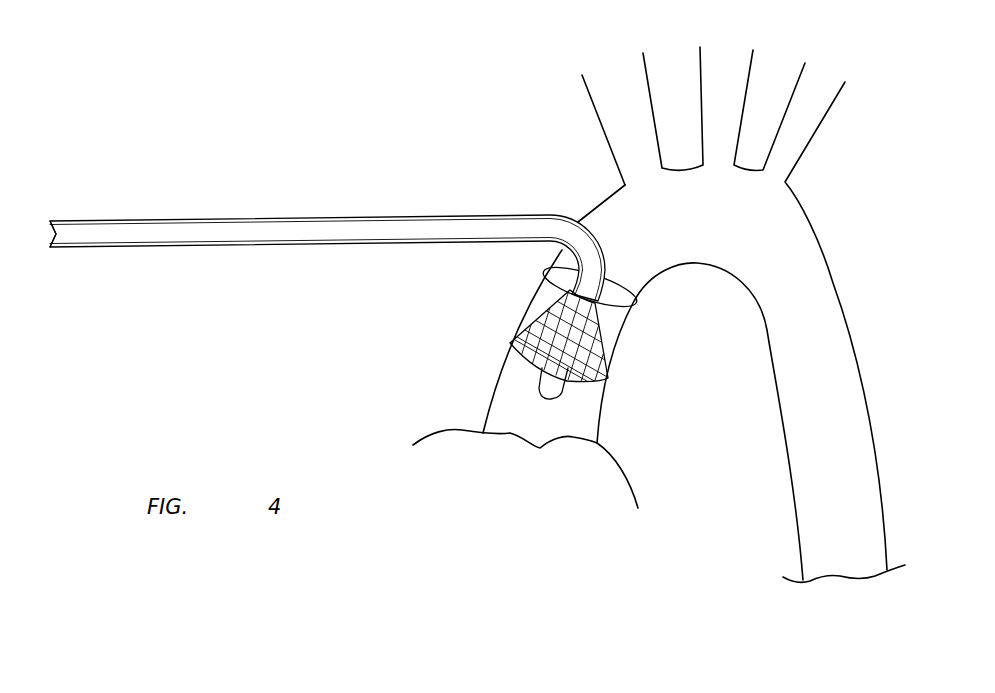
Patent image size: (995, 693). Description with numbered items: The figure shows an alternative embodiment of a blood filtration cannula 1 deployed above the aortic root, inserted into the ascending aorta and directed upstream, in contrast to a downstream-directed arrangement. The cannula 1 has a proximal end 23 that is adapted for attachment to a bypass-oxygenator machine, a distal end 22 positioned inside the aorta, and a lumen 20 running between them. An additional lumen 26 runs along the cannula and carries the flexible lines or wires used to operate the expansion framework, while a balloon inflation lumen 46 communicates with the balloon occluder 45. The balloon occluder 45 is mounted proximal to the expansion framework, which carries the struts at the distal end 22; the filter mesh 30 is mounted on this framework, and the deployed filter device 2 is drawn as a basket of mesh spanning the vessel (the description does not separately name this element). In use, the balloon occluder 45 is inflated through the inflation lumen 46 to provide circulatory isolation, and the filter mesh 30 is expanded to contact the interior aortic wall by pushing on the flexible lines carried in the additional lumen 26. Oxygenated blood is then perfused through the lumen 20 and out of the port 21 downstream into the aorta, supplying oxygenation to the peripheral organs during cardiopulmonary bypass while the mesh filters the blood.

The cannula 1 is at (373, 202).
The filter 2 is at (559, 355).
The lumen 20 is at (345, 235).
The port 21 is at (590, 258).
The distal end 22 is at (562, 388).
The proximal end 23 is at (43, 237).
The additional lumen 26 is at (117, 222).
The filter mesh 30 is at (540, 320).
The balloon occluder 45 is at (615, 293).
The balloon inflation lumen 46 is at (152, 244).